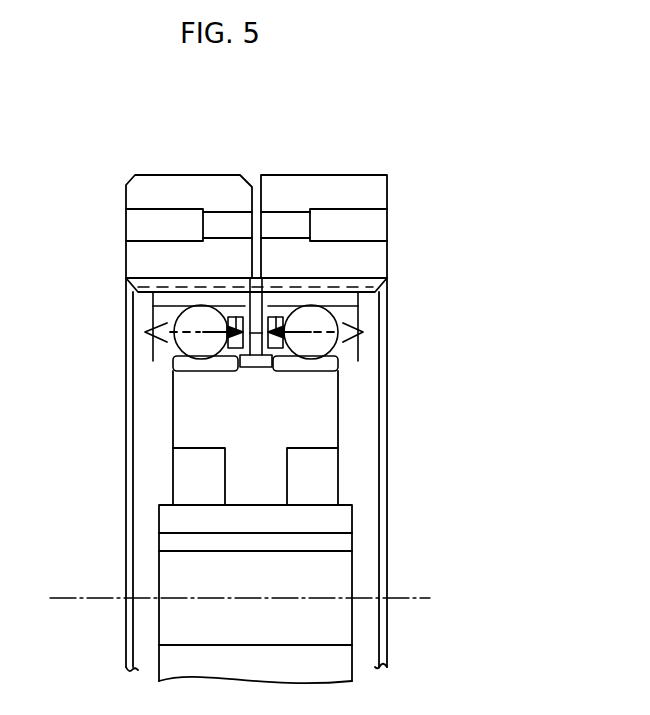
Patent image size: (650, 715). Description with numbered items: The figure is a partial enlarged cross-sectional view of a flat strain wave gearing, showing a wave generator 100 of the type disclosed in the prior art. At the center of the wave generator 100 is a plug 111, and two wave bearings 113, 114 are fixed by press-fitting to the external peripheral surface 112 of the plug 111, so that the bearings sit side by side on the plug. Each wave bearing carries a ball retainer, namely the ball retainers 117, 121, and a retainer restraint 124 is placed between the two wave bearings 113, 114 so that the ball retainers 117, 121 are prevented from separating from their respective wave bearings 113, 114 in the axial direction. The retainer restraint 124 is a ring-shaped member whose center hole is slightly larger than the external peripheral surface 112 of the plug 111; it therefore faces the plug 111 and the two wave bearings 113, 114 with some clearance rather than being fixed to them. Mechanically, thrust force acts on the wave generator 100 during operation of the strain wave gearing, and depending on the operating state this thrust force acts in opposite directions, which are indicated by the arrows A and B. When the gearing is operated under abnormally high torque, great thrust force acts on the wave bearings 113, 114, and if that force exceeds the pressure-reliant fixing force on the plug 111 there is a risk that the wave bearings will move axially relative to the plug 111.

The wave generator 100 is at (362, 545).
The plug 111 is at (305, 417).
The external peripheral surface 112 is at (333, 362).
The wave bearing 113 is at (362, 323).
The wave bearing 114 is at (148, 323).
The ball retainer 117 is at (273, 320).
The ball retainer 121 is at (238, 320).
The retainer restraint 124 is at (253, 365).
The arrow A is at (172, 343).
The arrow B is at (217, 335).